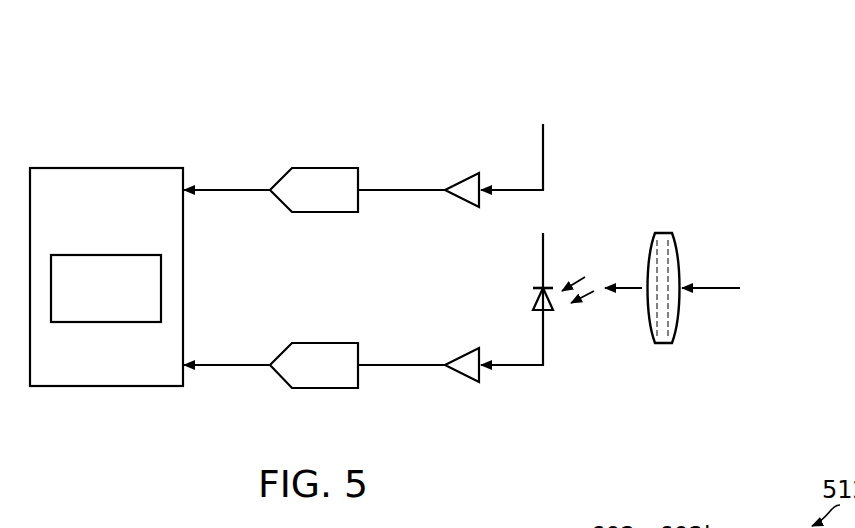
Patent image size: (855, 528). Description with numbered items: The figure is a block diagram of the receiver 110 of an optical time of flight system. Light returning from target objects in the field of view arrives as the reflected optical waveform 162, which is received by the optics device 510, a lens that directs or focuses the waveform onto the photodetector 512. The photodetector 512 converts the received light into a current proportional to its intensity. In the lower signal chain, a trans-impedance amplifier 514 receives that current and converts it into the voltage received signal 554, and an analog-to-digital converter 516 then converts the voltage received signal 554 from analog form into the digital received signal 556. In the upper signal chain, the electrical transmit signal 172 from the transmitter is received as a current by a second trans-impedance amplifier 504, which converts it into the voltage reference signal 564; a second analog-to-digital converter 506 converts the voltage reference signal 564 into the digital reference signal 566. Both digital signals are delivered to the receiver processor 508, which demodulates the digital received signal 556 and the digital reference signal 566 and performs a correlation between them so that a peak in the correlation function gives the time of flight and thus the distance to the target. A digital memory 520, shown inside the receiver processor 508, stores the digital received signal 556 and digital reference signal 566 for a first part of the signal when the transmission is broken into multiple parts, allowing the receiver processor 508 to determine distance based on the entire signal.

The receiver 110 is at (244, 89).
The receiver processor 508 is at (103, 168).
The digital memory 520 is at (105, 322).
The digital reference signal 566 is at (238, 190).
The analog-to-digital converter 506 is at (325, 168).
The voltage reference signal 564 is at (400, 190).
The trans-impedance amplifier 504 is at (456, 184).
The electrical transmit signal 172 is at (543, 158).
The photodetector 512 is at (535, 297).
The trans-impedance amplifier 514 is at (456, 372).
The voltage received signal 554 is at (400, 365).
The analog-to-digital converter 516 is at (320, 388).
The digital received signal 556 is at (238, 365).
The optics device 510 is at (664, 233).
The reflected optical waveform 162 is at (713, 288).